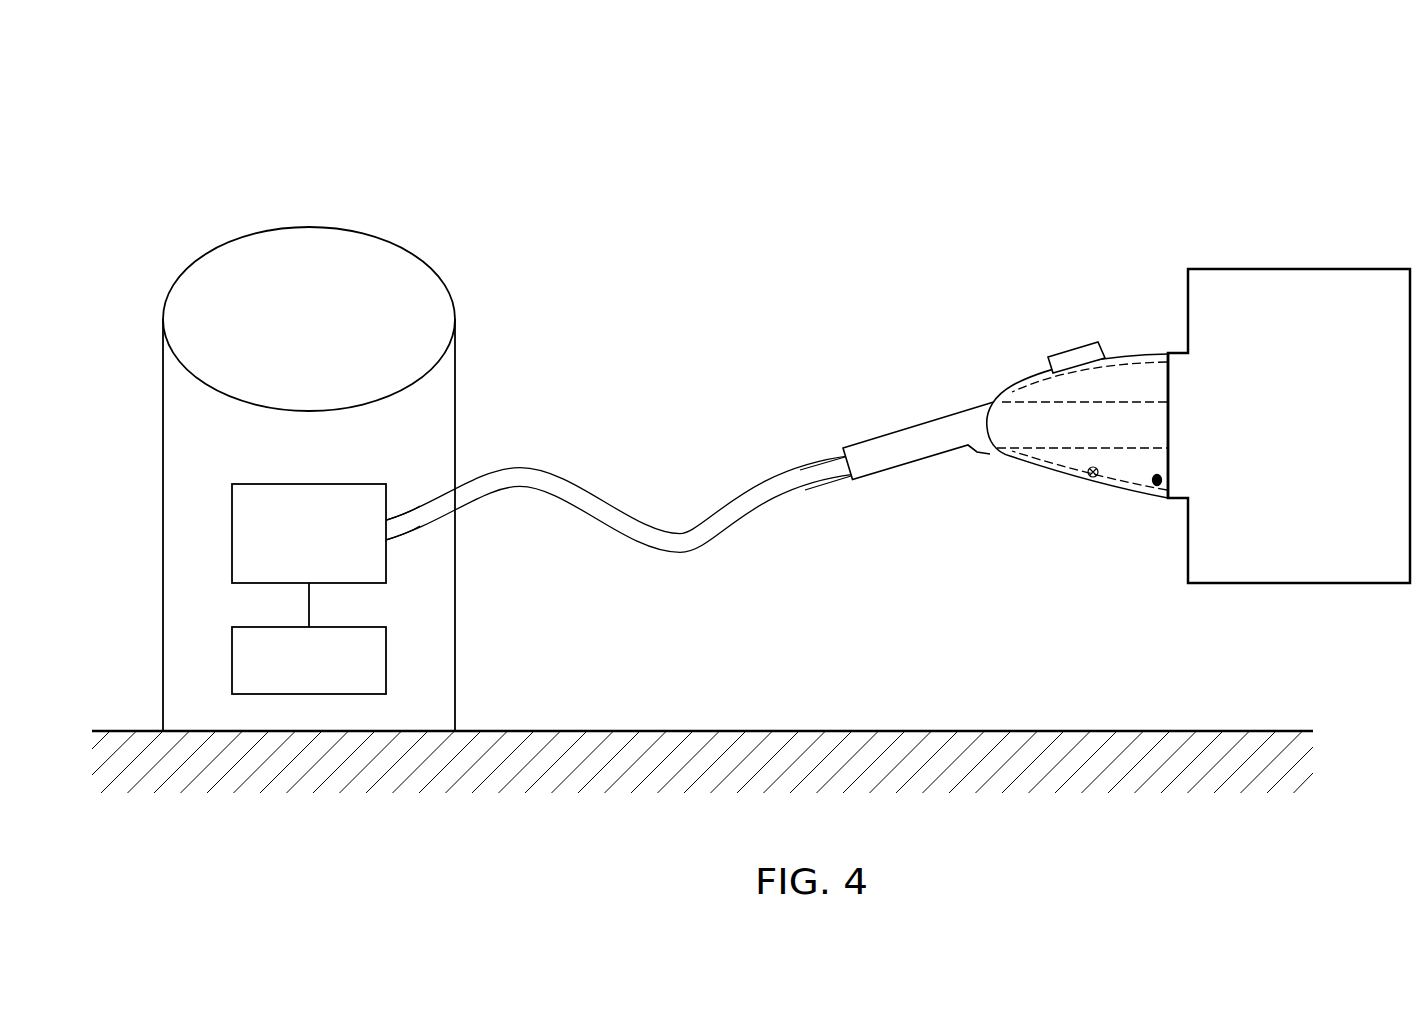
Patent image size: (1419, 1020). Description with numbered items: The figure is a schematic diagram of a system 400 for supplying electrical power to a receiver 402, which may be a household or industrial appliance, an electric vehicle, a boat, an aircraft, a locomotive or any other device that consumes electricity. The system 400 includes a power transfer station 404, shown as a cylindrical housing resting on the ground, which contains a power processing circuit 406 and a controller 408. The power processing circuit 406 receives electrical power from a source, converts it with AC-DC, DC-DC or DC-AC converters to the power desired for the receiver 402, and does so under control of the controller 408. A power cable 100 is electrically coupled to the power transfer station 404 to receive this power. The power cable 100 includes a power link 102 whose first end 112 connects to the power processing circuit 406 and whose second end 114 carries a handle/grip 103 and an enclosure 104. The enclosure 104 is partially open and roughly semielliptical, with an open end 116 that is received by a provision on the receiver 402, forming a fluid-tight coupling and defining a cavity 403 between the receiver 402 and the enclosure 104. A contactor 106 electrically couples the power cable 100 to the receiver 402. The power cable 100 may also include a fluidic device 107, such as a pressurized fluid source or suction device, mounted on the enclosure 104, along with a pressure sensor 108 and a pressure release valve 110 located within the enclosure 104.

The system 400 is at (243, 101).
The power transfer station 404 is at (185, 272).
The power processing circuit 406 is at (232, 551).
The controller 408 is at (232, 660).
The receiver 402 is at (1298, 268).
The power cable 100 is at (731, 409).
The power link 102 is at (567, 487).
The first end 112 is at (398, 525).
The second end 114 is at (830, 473).
The handle/grip 103 is at (867, 446).
The contactor 106 is at (1002, 433).
The enclosure 104 is at (1020, 386).
The fluidic device 107 is at (1072, 342).
The open end 116 is at (1171, 375).
The cavity 403 is at (1037, 455).
The pressure release valve 110 is at (1089, 478).
The pressure sensor 108 is at (1151, 489).